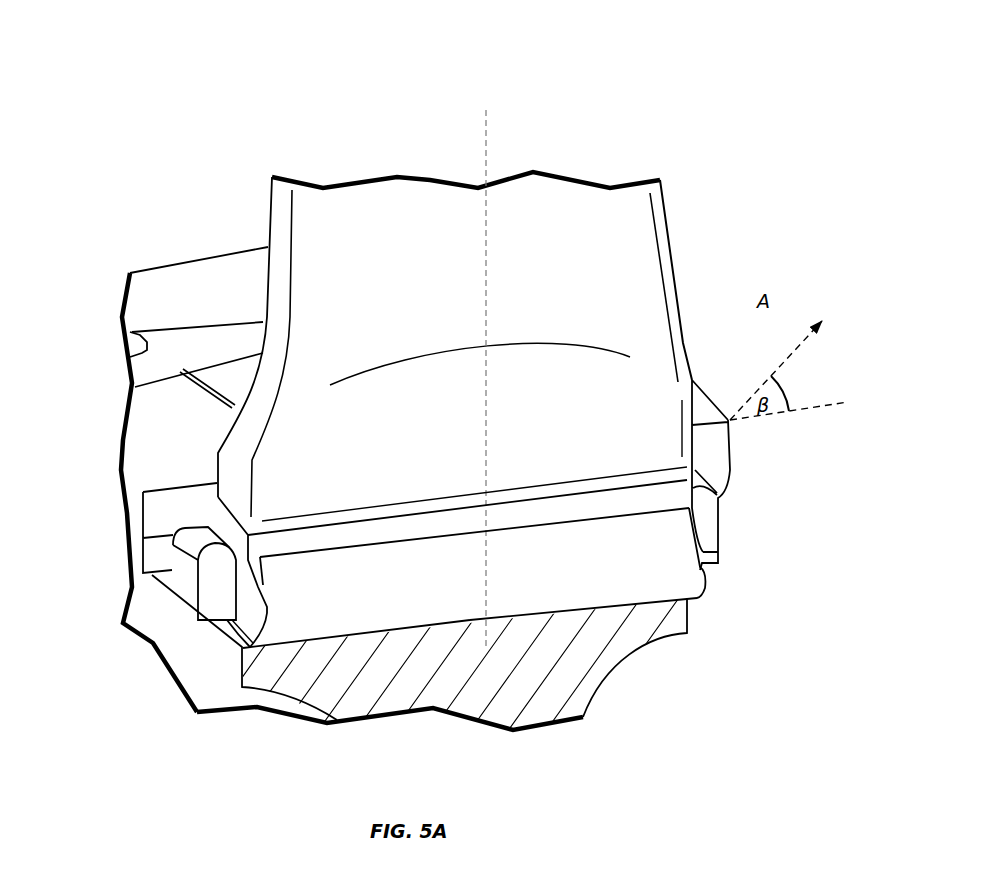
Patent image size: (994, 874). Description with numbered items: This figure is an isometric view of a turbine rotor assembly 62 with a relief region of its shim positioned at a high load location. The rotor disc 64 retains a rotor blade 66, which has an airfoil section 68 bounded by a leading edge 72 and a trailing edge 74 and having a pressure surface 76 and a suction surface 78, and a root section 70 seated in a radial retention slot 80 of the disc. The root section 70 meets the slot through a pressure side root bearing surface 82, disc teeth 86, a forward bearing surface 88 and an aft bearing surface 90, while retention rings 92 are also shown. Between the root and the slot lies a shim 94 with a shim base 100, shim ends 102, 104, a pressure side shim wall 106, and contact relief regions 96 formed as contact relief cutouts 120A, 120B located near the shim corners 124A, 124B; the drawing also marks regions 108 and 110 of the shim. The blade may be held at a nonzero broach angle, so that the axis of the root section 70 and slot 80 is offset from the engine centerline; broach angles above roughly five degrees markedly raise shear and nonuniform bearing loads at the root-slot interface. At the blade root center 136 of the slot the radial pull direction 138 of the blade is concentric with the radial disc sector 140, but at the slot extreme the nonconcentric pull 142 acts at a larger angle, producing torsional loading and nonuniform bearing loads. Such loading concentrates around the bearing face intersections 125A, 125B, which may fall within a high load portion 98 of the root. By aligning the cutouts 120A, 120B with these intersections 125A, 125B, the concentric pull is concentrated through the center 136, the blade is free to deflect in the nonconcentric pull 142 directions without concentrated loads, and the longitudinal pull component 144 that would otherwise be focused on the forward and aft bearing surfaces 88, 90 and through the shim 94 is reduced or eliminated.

The rotor assembly 62 is at (168, 177).
The rotor disc 64 is at (106, 318).
The rotor blade 66 is at (688, 190).
The airfoil section 68 is at (608, 220).
The root section 70 is at (357, 530).
The leading edge 72 is at (277, 222).
The trailing edge 74 is at (668, 260).
The pressure surface 76 is at (335, 257).
The suction surface 78 is at (467, 177).
The radial retention slot 80 is at (368, 658).
The pressure side root bearing surface 82 is at (447, 527).
The disc teeth 86 is at (172, 512).
The forward bearing surface 88 is at (257, 607).
The aft bearing surface 90 is at (713, 573).
The retention rings 92 is at (162, 589).
The shim 94 is at (562, 540).
The contact relief regions 96 is at (275, 568).
The high load portion 98 is at (250, 577).
The shim base 100 is at (610, 610).
The shim end 102 is at (250, 648).
The shim end 104 is at (702, 603).
The pressure side shim wall 106 is at (517, 597).
The shim first surface 108 is at (430, 597).
The shim second surface 110 is at (550, 590).
The contact relief cutout 120A is at (275, 590).
The contact relief cutout 120B is at (695, 568).
The shim corner 124A is at (270, 557).
The shim corner 124B is at (672, 508).
The bearing face intersection 125A is at (247, 603).
The bearing face intersection 125B is at (707, 550).
The blade root center 136 is at (493, 577).
The radial pull direction 138 is at (486, 112).
The radial disc sector 140 is at (473, 362).
The nonconcentric pull 142 is at (350, 102).
The longitudinal pull component 144 is at (350, 102).